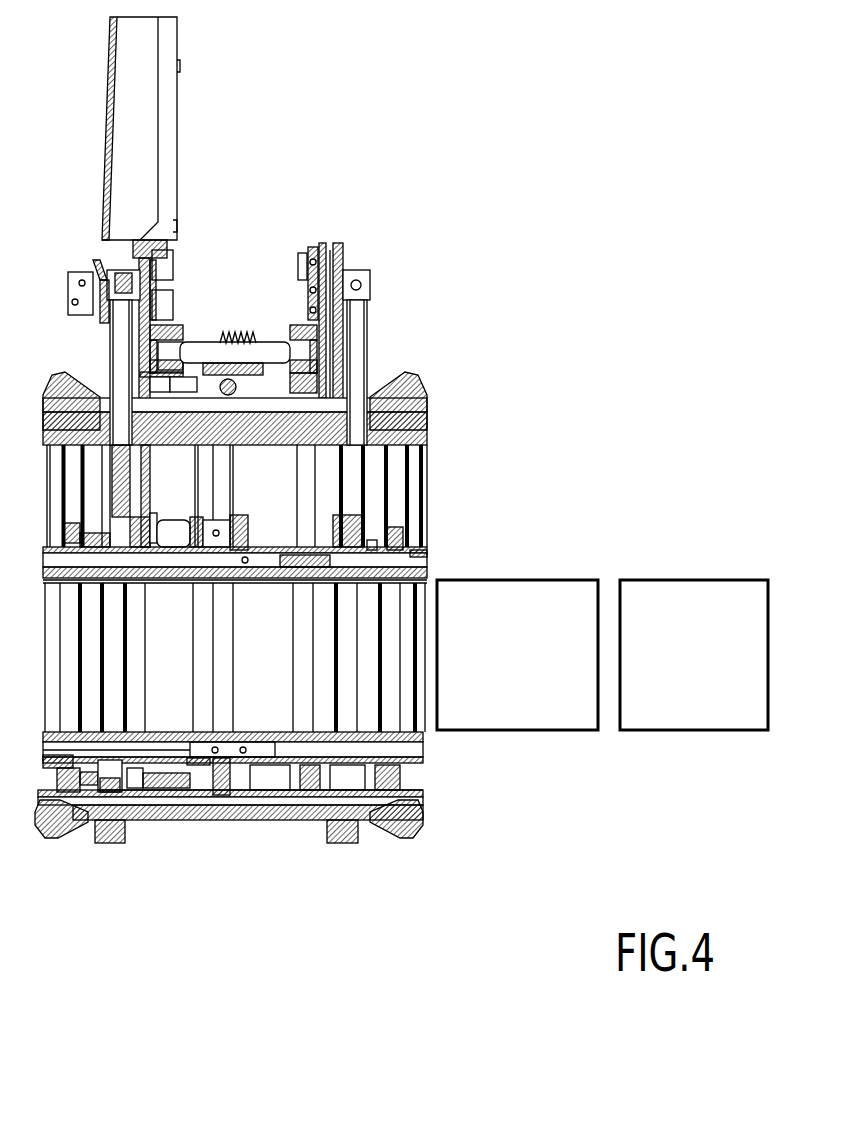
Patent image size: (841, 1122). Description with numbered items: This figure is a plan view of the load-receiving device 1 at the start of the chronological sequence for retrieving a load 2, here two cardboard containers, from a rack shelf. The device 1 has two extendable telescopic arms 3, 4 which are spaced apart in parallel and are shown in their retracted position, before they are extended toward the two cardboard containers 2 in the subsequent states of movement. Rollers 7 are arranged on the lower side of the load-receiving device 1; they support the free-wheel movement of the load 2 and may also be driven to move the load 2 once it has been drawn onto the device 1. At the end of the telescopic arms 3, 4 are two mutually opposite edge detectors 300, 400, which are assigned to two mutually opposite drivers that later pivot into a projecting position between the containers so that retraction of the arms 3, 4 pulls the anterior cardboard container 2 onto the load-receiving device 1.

The load-receiving device 1 is at (441, 323).
The load 2 is at (545, 592).
The telescopic arm 3 is at (420, 540).
The edge detector 300 is at (423, 575).
The telescopic arm 4 is at (417, 753).
The edge detector 400 is at (420, 733).
The roller 7 is at (92, 678).